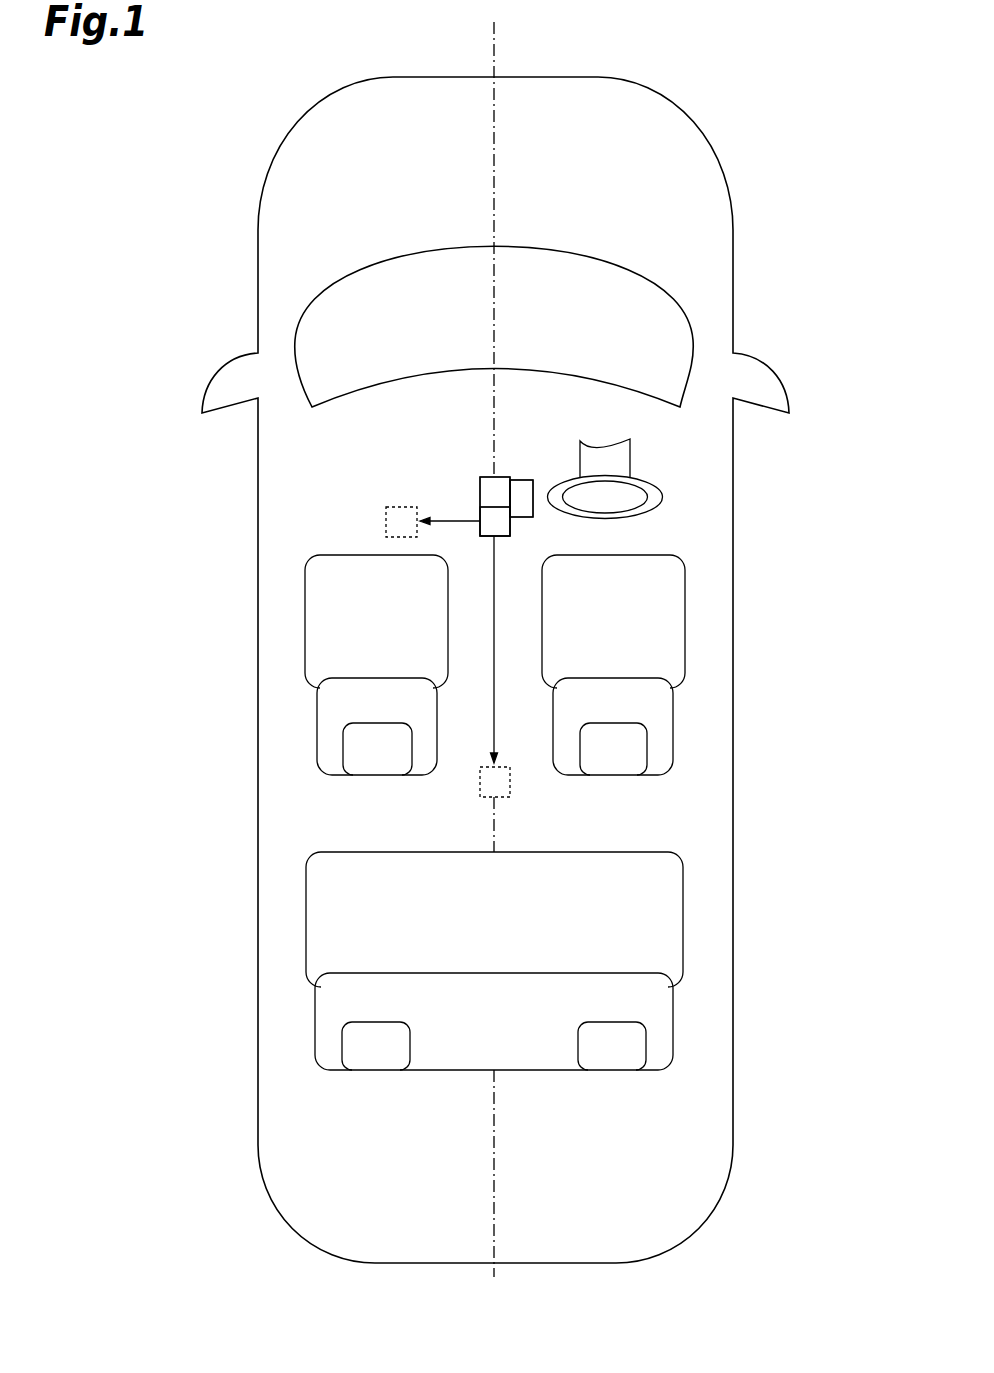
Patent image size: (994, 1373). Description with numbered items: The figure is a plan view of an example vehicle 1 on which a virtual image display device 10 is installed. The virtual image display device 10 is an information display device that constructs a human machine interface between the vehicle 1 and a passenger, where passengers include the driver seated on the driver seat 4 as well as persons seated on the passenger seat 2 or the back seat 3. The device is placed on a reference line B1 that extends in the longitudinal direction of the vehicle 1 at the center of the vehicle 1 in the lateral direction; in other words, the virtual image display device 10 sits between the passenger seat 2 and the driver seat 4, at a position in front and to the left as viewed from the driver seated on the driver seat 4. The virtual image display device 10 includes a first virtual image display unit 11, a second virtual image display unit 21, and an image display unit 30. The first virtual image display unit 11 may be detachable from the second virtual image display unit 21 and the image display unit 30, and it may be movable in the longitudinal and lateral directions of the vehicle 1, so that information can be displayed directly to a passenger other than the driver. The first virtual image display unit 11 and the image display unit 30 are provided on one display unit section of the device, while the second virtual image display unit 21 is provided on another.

The vehicle 1 is at (688, 113).
The reference line B1 is at (494, 118).
The passenger seat 2 is at (327, 627).
The back seat 3 is at (347, 925).
The driver seat 4 is at (660, 611).
The virtual image display device 10 is at (523, 472).
The first virtual image display unit 11 is at (487, 518).
The second virtual image display unit 21 is at (533, 517).
The image display unit 30 is at (490, 492).